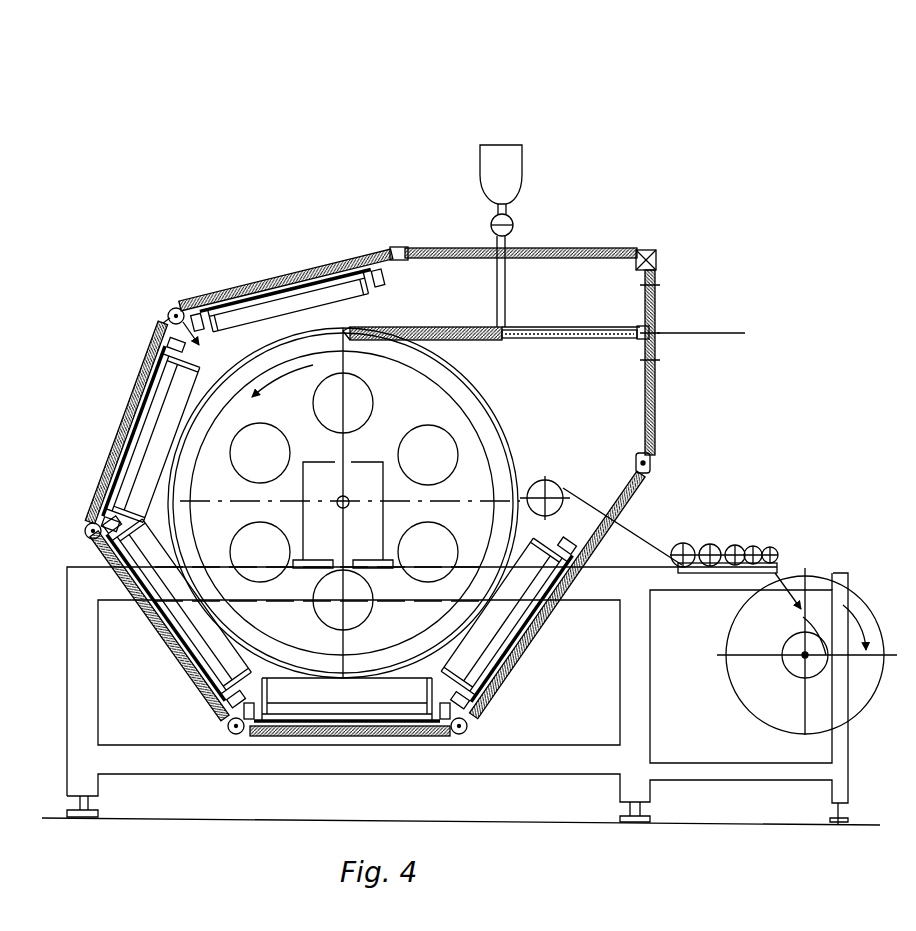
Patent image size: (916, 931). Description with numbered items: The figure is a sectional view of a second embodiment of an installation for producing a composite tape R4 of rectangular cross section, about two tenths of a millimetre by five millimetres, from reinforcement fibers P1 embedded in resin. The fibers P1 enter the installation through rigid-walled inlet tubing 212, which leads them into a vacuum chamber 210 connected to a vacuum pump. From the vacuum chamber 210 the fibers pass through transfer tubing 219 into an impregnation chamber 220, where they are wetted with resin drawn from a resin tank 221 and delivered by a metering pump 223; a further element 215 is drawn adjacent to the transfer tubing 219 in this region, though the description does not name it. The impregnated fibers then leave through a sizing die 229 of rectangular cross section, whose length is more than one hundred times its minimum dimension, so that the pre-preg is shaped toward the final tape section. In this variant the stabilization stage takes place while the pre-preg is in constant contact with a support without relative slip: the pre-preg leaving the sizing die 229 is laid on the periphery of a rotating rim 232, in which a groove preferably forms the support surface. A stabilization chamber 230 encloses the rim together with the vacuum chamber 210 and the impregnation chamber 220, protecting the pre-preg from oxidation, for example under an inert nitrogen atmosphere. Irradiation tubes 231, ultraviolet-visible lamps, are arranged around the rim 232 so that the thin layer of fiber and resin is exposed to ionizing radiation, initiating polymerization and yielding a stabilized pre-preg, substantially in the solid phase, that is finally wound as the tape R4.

The vacuum chamber 210 is at (570, 323).
The inlet tubing 212 is at (660, 298).
The guide plate 215 is at (568, 340).
The transfer tubing 219 is at (510, 340).
The impregnation chamber 220 is at (448, 323).
The resin tank 221 is at (497, 163).
The metering pump 223 is at (513, 213).
The sizing die 229 is at (352, 300).
The stabilization chamber 230 is at (170, 312).
The irradiation tubes 231 is at (233, 293).
The rim 232 is at (500, 470).
The tape R4 is at (650, 542).
The fibers P1 is at (680, 327).